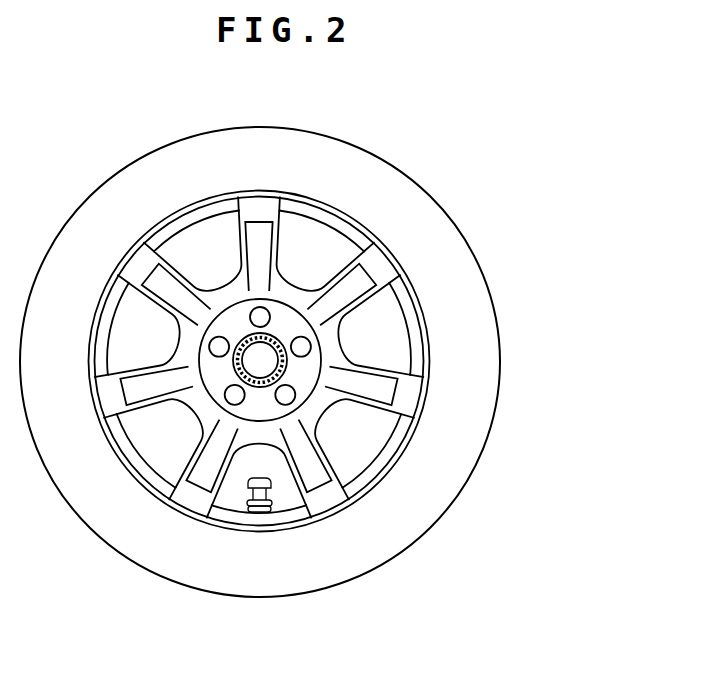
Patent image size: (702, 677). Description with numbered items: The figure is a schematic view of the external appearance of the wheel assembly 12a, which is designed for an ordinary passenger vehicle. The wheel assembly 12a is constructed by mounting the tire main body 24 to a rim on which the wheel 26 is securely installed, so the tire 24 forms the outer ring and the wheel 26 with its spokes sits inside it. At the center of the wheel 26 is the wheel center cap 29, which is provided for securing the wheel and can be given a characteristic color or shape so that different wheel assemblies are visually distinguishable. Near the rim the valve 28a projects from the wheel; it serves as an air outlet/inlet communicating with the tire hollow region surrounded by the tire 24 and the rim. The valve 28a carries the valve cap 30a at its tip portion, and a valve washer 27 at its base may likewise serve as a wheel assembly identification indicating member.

The wheel assembly 12a is at (293, 365).
The tire main body 24 is at (310, 150).
The wheel 26 is at (330, 396).
The valve washer 27 is at (279, 506).
The valve 28a is at (243, 497).
The wheel center cap 29 is at (285, 367).
The valve cap 30a is at (268, 472).